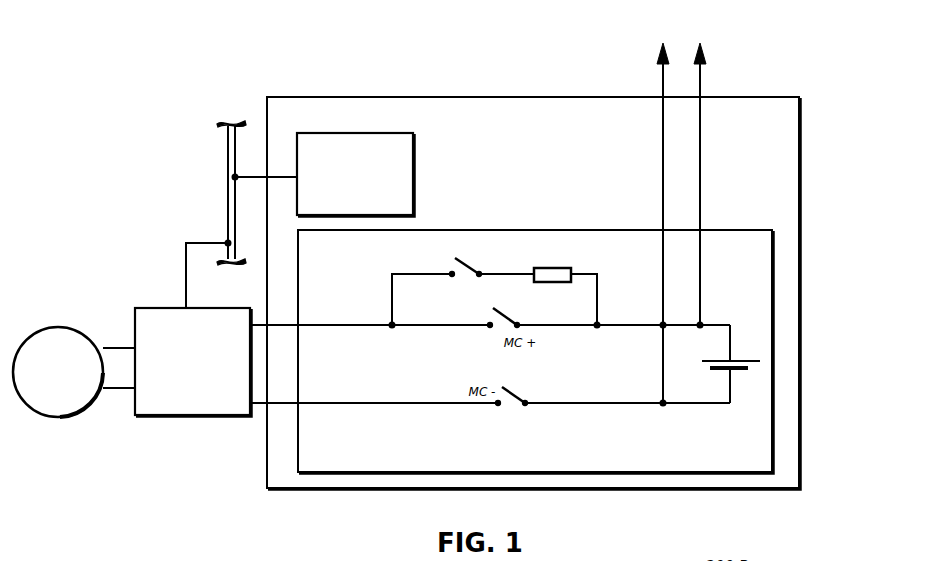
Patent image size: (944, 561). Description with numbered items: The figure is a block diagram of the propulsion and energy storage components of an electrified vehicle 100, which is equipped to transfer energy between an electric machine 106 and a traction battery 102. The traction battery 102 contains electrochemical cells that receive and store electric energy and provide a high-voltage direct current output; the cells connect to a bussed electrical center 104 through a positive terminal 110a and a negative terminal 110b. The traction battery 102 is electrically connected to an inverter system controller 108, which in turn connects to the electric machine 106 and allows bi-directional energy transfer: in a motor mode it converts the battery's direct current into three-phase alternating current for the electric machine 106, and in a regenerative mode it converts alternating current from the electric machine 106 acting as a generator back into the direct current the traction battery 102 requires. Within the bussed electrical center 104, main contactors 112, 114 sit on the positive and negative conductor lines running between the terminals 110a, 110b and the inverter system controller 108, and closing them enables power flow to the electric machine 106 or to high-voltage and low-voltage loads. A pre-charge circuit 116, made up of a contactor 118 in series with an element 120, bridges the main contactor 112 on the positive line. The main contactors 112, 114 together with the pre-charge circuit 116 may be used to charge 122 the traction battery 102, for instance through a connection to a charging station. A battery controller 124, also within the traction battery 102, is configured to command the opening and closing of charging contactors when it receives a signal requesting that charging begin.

The electrified vehicle 100 is at (116, 74).
The traction battery 102 is at (533, 293).
The bussed electrical center 104 is at (535, 351).
The electric machine 106 is at (74, 372).
The inverter system controller 108 is at (193, 362).
The positive terminal 110a is at (750, 357).
The negative terminal 110b is at (752, 373).
The main contactor 112 is at (508, 312).
The main contactor 114 is at (515, 393).
The pre-charge circuit 116 is at (532, 232).
The contactor 118 is at (468, 262).
The precharge resistor 120 is at (552, 268).
The charge 122 is at (662, 182).
The battery controller 124 is at (324, 174).